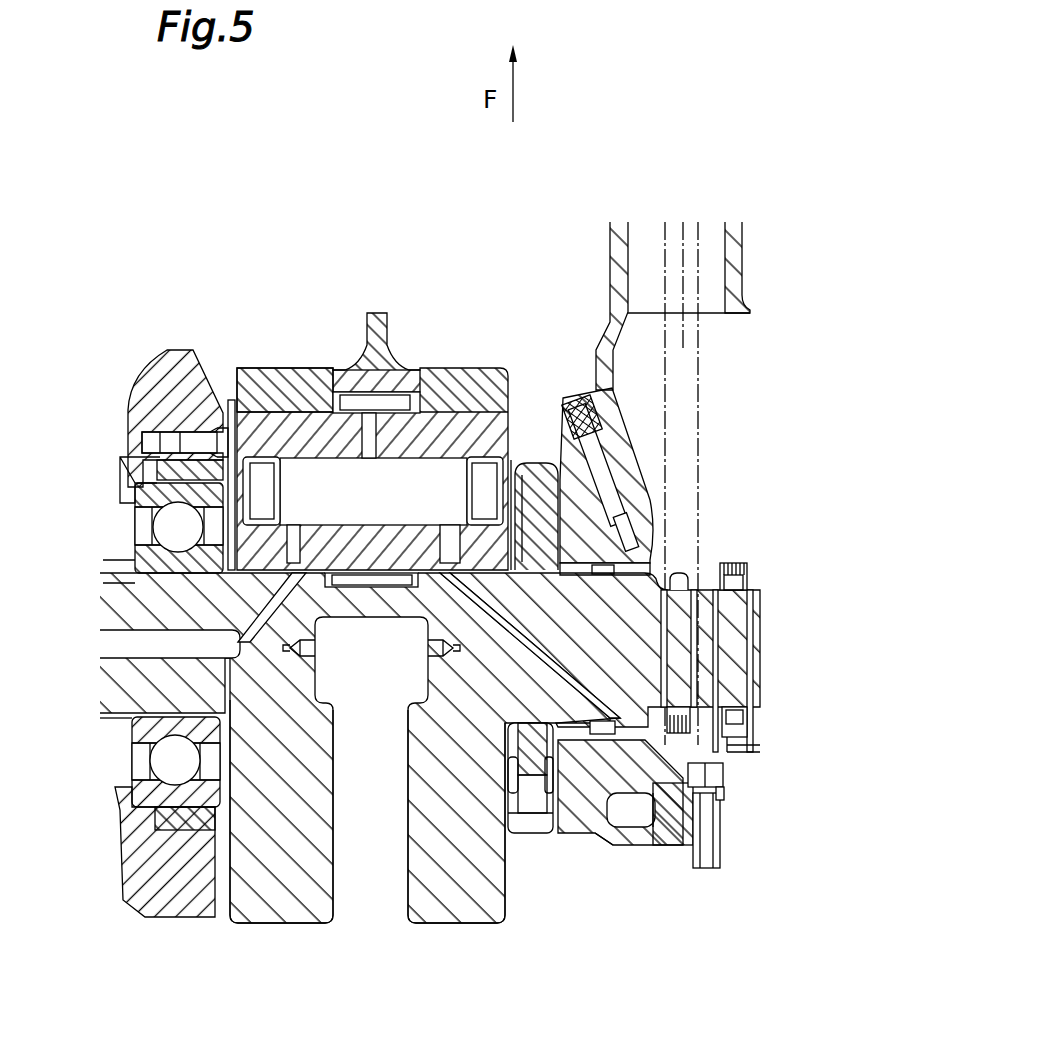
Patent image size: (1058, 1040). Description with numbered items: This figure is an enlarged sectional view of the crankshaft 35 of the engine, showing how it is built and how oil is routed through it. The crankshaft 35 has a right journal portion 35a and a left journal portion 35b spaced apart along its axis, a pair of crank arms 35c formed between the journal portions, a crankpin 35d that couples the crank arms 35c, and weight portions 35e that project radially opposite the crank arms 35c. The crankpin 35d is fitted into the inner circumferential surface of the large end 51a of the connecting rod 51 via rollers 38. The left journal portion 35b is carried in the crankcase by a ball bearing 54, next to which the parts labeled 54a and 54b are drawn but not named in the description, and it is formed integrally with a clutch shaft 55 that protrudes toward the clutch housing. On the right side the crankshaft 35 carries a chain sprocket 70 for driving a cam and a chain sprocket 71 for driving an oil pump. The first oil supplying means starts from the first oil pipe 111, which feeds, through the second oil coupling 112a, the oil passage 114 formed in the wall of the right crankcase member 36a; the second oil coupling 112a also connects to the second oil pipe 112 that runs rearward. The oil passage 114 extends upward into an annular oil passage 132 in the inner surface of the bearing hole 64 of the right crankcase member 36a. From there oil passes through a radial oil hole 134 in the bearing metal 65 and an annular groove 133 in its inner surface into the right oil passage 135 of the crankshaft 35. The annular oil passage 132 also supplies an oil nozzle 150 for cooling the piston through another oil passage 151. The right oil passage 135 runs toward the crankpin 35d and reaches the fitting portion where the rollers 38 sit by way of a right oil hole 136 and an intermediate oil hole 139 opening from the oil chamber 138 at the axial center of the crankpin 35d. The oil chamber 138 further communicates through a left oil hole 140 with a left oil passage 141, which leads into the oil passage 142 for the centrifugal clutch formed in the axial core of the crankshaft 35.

The crankshaft 35 is at (405, 938).
The right journal portion 35a is at (617, 700).
The left journal portion 35b is at (163, 692).
The crank arms 35c is at (240, 380).
The crankpin 35d is at (455, 375).
The weight portions 35e is at (275, 870).
The right crankcase member 36a is at (598, 862).
The rollers 38 is at (397, 385).
The connecting rod 51 is at (375, 345).
The large end of connecting rod 51a is at (357, 372).
The ball bearing 54 is at (178, 770).
The upper bracket 54a is at (180, 400).
The bolt 54b is at (165, 470).
The clutch shaft 55 is at (125, 603).
The bearing hole 64 is at (577, 772).
The bearing metal 65 is at (535, 740).
The chain sprocket for driving a cam 70 is at (680, 572).
The chain sprocket for driving an oil pump 71 is at (735, 565).
The first oil pipe 111 is at (722, 784).
The second oil pipe 112 is at (707, 852).
The second oil coupling 112a is at (727, 800).
The oil passage 114 is at (667, 847).
The annular oil passage 132 is at (595, 820).
The annular groove 133 is at (582, 697).
The radial oil hole 134 is at (638, 812).
The right oil passage 135 is at (507, 622).
The right oil hole 136 is at (450, 545).
The oil chamber 138 is at (395, 498).
The intermediate oil hole 139 is at (362, 437).
The left oil hole 140 is at (295, 545).
The left oil passage 141 is at (255, 612).
The oil passage for the centrifugal clutch 142 is at (180, 643).
The oil nozzle 150 is at (573, 403).
The oil passage 151 is at (620, 450).